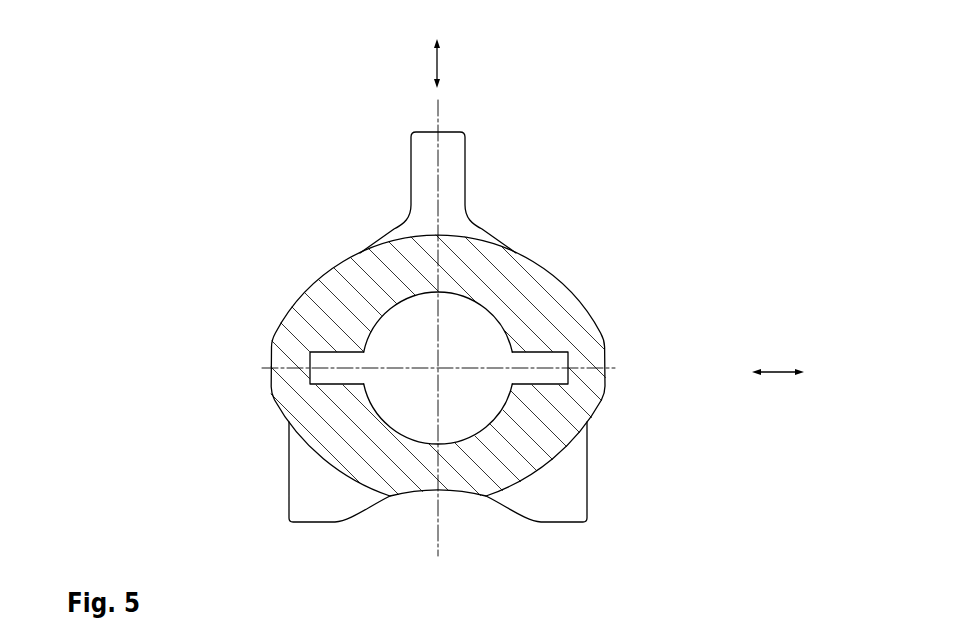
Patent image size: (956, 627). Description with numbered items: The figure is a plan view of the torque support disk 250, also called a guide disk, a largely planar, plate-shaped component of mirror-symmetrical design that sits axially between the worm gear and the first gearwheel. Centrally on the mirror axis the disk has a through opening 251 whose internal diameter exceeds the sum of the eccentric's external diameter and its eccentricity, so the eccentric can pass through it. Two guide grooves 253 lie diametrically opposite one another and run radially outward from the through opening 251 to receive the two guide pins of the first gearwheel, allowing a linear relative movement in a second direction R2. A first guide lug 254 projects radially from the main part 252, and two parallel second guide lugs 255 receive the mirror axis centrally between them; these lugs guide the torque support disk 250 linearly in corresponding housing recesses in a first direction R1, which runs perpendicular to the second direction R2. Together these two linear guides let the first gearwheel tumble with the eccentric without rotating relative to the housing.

The torque support disk 250 is at (445, 328).
The through opening 251 is at (398, 332).
The main part 252 is at (360, 278).
The guide grooves 253 is at (325, 377).
The first guide lug 254 is at (458, 168).
The second guide lugs 255 is at (310, 502).
The first direction R1 is at (437, 62).
The second direction R2 is at (776, 372).